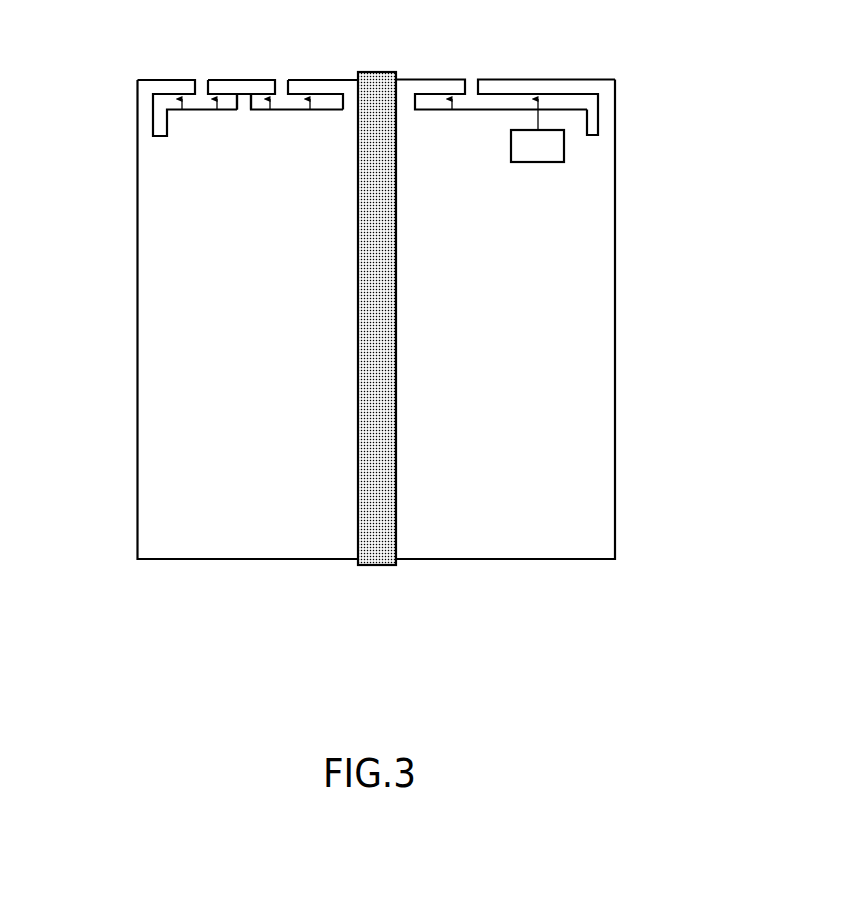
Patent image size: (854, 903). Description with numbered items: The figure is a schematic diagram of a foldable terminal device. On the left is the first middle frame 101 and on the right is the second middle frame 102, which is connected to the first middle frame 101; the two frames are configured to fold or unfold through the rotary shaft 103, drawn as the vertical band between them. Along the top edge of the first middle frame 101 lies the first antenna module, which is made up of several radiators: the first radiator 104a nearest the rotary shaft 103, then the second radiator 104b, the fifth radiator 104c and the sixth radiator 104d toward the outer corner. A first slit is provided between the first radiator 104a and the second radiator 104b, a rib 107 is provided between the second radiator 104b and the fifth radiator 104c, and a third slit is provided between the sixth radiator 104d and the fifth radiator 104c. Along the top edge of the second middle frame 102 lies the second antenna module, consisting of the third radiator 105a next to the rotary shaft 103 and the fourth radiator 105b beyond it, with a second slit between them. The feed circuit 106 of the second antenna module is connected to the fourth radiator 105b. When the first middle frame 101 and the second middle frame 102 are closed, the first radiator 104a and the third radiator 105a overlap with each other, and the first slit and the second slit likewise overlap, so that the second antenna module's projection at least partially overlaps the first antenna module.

The first middle frame 101 is at (232, 294).
The second middle frame 102 is at (507, 285).
The rotary shaft 103 is at (378, 567).
The first radiator 104a is at (330, 78).
The second radiator 104b is at (270, 93).
The fifth radiator 104c is at (218, 93).
The sixth radiator 104d is at (162, 78).
The third radiator 105a is at (430, 78).
The fourth radiator 105b is at (555, 78).
The feed circuit 106 is at (540, 164).
The rib 107 is at (243, 113).